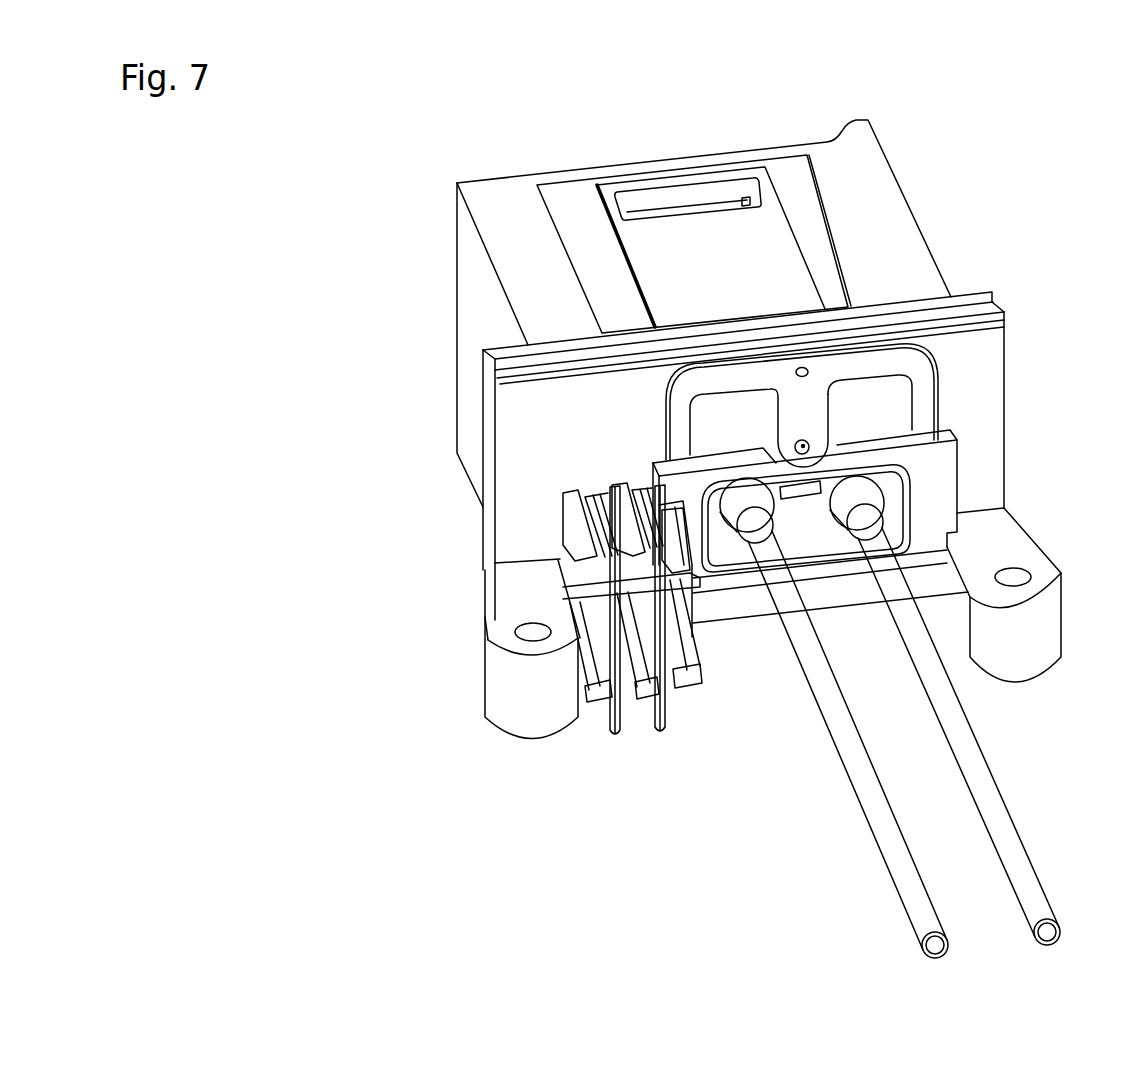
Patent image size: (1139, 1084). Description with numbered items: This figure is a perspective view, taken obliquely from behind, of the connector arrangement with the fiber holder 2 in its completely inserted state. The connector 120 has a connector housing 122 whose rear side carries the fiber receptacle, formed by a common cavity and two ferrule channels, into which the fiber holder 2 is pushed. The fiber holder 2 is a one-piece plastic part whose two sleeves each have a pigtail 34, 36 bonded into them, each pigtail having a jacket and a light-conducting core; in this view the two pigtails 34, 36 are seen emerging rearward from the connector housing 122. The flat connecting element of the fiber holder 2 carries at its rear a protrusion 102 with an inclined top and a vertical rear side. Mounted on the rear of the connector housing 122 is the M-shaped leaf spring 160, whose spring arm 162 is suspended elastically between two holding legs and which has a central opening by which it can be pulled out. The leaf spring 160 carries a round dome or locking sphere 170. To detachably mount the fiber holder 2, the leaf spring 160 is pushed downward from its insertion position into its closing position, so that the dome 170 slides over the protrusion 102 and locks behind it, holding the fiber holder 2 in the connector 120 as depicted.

The fiber holder 2 is at (890, 493).
The pigtail 34 is at (873, 815).
The pigtail 36 is at (990, 800).
The protrusion 102 is at (786, 500).
The connector 120 is at (1005, 374).
The connector housing 122 is at (992, 433).
The leaf spring 160 is at (930, 365).
The spring arm 162 is at (802, 406).
The dome 170 is at (794, 449).